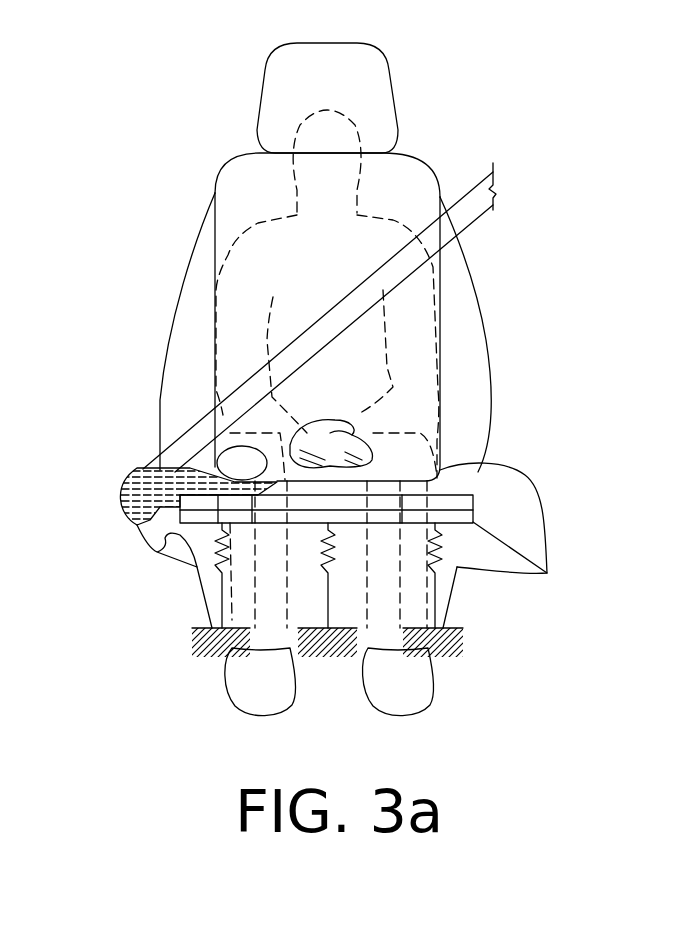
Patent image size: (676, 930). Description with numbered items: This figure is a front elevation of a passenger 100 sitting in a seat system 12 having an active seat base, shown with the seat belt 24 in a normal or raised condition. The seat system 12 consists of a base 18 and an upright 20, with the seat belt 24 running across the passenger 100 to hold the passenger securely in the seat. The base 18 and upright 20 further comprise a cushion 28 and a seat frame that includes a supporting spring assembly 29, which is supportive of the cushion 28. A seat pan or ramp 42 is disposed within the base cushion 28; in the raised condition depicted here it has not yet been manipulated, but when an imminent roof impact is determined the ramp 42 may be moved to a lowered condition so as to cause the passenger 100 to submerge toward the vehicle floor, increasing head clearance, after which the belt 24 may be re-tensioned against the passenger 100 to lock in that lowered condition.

The passenger 100 is at (372, 216).
The seat belt 24 is at (496, 193).
The seat system 12 is at (496, 291).
The upright 20 is at (490, 375).
The base 18 is at (538, 490).
The seat pan or ramp 42 is at (545, 573).
The cushion 28 is at (245, 448).
The supporting spring assembly 29 is at (153, 550).